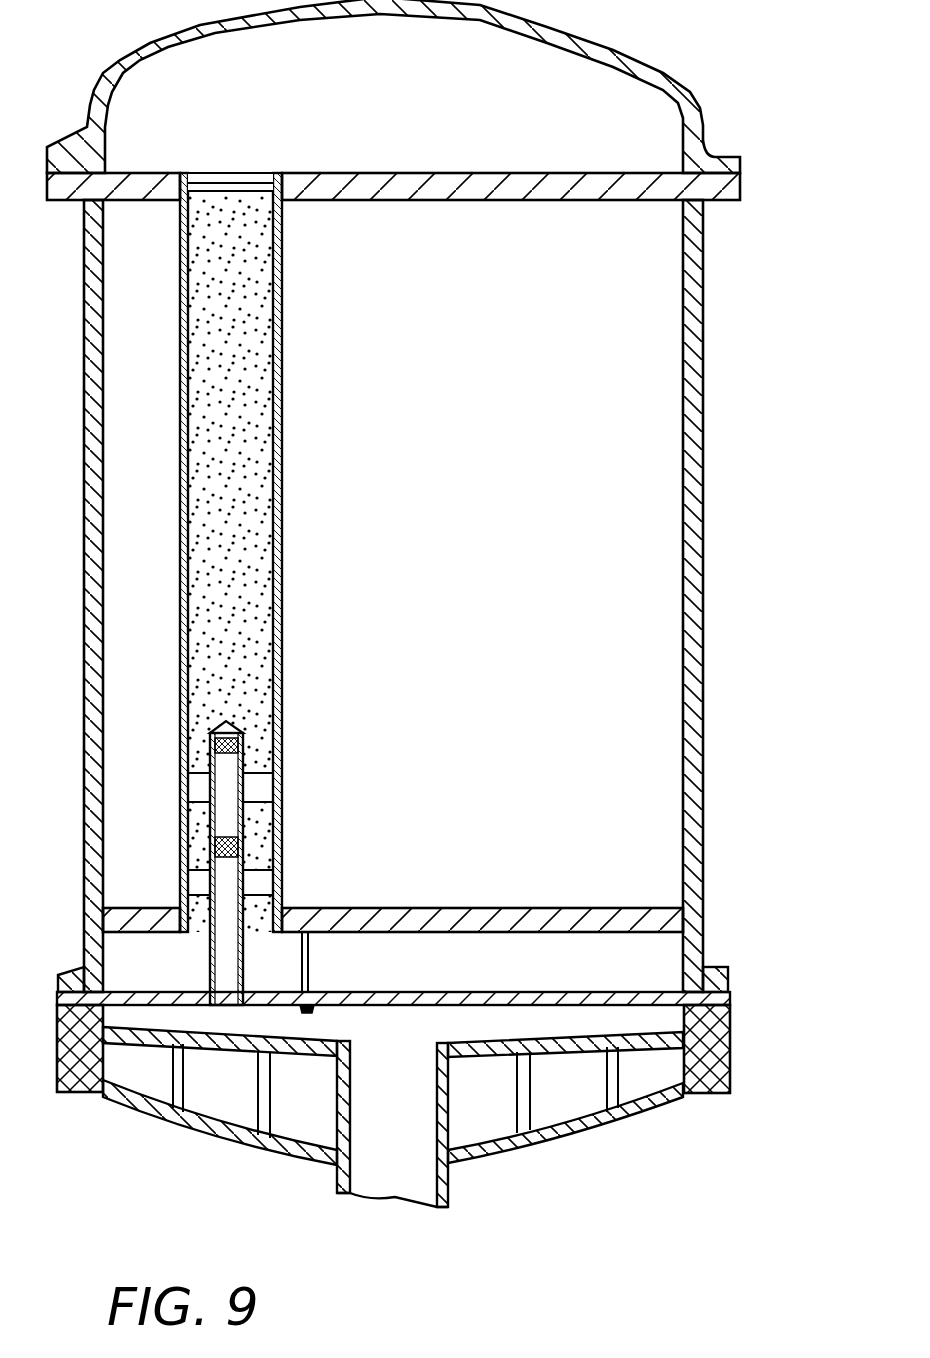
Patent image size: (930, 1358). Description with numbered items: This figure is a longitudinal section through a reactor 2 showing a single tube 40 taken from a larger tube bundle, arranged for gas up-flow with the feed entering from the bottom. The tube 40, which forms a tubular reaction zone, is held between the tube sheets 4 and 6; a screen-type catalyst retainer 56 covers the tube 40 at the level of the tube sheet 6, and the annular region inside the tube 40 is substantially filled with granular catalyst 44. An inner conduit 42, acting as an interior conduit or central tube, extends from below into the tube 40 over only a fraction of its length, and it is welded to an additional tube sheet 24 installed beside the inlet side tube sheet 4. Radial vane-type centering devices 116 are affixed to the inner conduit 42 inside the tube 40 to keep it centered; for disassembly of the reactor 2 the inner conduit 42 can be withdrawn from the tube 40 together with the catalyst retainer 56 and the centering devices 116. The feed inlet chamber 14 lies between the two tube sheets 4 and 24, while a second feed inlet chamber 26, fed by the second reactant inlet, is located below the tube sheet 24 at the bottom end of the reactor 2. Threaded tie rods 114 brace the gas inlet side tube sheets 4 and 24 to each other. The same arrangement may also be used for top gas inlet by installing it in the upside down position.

The reactor 2 is at (703, 651).
The tube sheet 4 is at (703, 918).
The tube sheet 6 is at (445, 172).
The feed inlet chamber 14 is at (651, 961).
The tube sheet 24 is at (475, 992).
The feed inlet chamber 26 is at (651, 1015).
The tube 40 is at (283, 467).
The inner conduit 42 is at (241, 832).
The granular catalyst 44 is at (262, 388).
The screen-type catalyst retainer 56 is at (229, 172).
The threaded tie rods 114 is at (309, 962).
The radial vane-type centering devices 116 is at (263, 788).